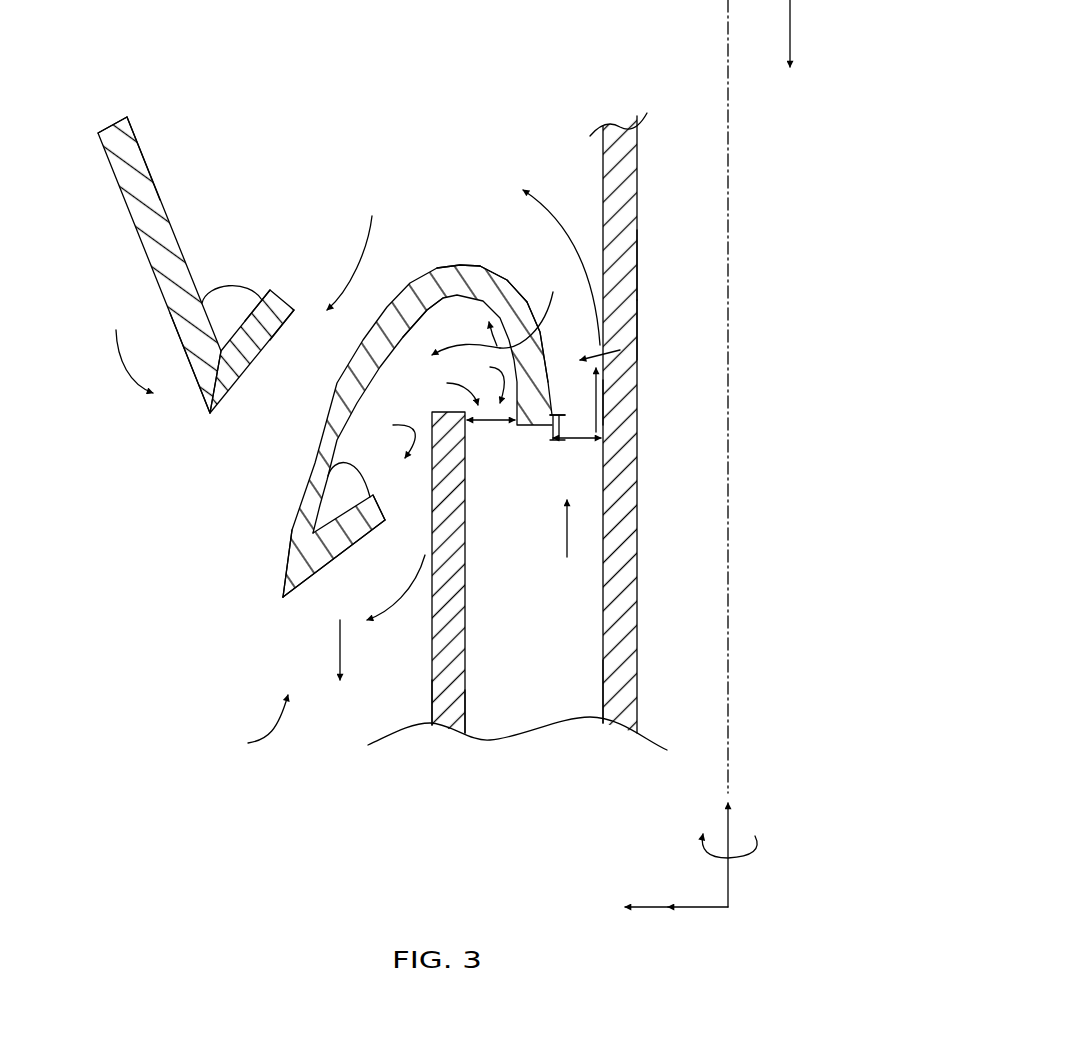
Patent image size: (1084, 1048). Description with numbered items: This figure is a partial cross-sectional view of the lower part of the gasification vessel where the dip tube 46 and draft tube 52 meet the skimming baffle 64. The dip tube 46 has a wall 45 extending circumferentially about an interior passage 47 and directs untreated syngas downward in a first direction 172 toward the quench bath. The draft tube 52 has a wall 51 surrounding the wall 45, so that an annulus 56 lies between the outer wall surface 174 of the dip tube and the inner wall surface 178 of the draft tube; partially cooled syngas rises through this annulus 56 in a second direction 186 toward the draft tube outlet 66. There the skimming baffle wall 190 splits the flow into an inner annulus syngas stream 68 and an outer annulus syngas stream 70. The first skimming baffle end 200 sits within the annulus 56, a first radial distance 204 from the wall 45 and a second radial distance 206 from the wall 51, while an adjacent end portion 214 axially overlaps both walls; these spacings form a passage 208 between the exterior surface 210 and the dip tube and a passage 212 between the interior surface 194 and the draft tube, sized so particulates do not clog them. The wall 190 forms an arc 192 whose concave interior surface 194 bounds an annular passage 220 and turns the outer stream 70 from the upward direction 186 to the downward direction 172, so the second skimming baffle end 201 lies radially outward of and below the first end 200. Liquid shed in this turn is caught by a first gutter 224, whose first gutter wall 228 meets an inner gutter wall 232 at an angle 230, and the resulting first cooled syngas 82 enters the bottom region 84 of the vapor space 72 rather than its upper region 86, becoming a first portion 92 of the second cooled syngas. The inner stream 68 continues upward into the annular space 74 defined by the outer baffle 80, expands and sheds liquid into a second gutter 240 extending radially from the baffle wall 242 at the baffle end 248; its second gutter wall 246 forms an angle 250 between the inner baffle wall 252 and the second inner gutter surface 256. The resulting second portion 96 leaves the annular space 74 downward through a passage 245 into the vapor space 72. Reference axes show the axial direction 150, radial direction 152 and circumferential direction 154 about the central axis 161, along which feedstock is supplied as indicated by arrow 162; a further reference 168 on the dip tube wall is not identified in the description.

The wall 45 is at (638, 168).
The dip tube 46 is at (633, 273).
The interior passage 47 is at (676, 390).
The wall 51 is at (432, 697).
The draft tube 52 is at (466, 536).
The annulus 56 is at (523, 618).
The skimming baffle 64 is at (450, 275).
The draft tube outlet 66 is at (450, 387).
The inner annulus syngas stream 68 is at (567, 230).
The outer annulus syngas stream 70 is at (473, 338).
The vapor space 72 is at (156, 568).
The annular space 74 is at (271, 220).
The baffle 80 is at (138, 153).
The first cooled syngas 82 is at (391, 436).
The bottom region 84 is at (257, 721).
The upper region 86 is at (128, 348).
The first portion of second cooled syngas 92 is at (418, 582).
The second portion of second cooled syngas 96 is at (349, 250).
The axial axis 150 is at (731, 823).
The radial axis 152 is at (705, 908).
The circumferential axis 154 is at (702, 852).
The central axis 161 is at (727, 10).
The feedstock supply arrow 162 is at (788, 5).
The wall surface point 168 is at (597, 402).
The first direction 172 is at (338, 648).
The outer wall surface 174 is at (602, 686).
The inner wall surface 178 is at (467, 718).
The second direction 186 is at (563, 547).
The skimming baffle wall 190 is at (543, 371).
The arc 192 is at (535, 306).
The interior surface 194 is at (423, 328).
The first skimming baffle end 200 is at (553, 440).
The second skimming baffle end 201 is at (283, 597).
The first radial distance 204 is at (575, 441).
The second radial distance 206 is at (487, 422).
The passage 208 is at (637, 338).
The exterior surface 210 is at (510, 278).
The passage 212 is at (483, 378).
The portion 214 is at (563, 420).
The annular passage 220 is at (375, 411).
The first gutter 224 is at (369, 530).
The first gutter wall 228 is at (330, 561).
The angle 230 is at (358, 479).
The inner gutter wall 232 is at (373, 494).
The second gutter 240 is at (282, 305).
The baffle wall 242 is at (165, 235).
The passage 245 is at (254, 423).
The second gutter wall 246 is at (288, 318).
The baffle end 248 is at (210, 416).
The angle 250 is at (210, 298).
The inner baffle wall 252 is at (163, 198).
The second inner gutter surface 256 is at (263, 300).